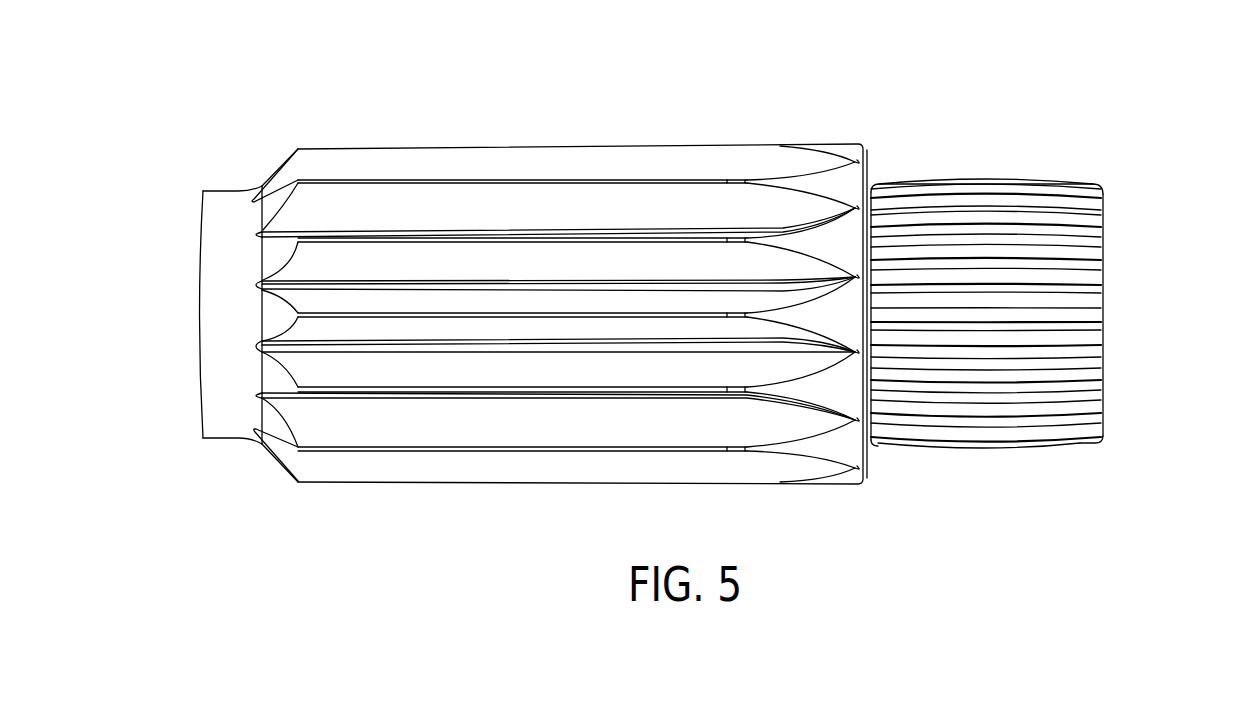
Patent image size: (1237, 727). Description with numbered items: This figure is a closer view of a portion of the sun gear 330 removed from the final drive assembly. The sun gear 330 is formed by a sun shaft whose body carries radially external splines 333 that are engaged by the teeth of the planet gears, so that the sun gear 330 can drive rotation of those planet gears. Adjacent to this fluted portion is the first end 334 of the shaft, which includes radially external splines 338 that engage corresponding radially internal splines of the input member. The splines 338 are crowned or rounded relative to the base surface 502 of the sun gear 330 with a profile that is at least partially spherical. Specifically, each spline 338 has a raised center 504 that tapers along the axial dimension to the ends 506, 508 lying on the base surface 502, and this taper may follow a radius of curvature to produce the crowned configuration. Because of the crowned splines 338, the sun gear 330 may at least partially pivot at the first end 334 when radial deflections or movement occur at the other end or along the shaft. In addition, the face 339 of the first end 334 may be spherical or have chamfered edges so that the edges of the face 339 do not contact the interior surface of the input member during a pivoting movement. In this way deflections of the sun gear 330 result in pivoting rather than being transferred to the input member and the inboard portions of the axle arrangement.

The sun gear 330 is at (823, 98).
The radially external splines 333 is at (344, 468).
The radially external splines 338 is at (1006, 183).
The base surface 502 is at (1103, 290).
The face 339 is at (1103, 371).
The end 508 is at (1104, 441).
The end 506 is at (883, 448).
The raised center 504 is at (977, 447).
The first end 334 is at (1020, 456).